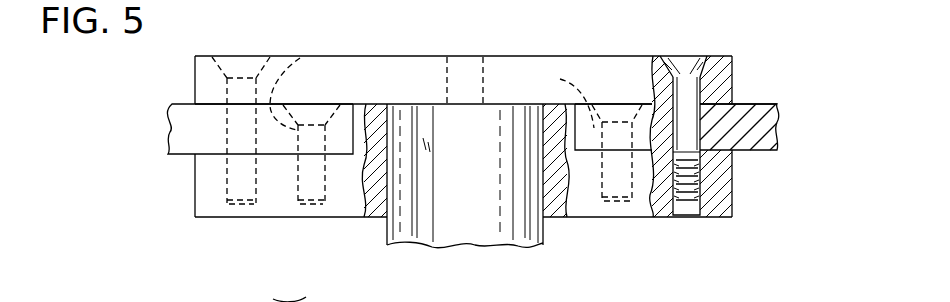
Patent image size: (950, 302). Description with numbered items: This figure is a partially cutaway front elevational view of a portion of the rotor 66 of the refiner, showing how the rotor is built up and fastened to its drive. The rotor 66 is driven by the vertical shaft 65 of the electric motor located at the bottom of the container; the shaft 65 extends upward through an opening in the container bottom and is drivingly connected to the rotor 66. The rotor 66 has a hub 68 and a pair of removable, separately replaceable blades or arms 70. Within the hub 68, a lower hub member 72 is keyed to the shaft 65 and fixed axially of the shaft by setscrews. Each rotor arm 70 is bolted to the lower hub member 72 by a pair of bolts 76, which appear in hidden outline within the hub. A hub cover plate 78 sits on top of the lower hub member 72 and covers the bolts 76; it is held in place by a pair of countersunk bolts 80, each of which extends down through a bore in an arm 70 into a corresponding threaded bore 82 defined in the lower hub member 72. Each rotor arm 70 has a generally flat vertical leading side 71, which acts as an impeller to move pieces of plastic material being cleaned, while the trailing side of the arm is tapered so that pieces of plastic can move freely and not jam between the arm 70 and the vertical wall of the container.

The vertical shaft 65 is at (465, 217).
The rotor 66 is at (748, 89).
The hub 68 is at (577, 218).
The rotor arm 70 is at (182, 104).
The leading side 71 is at (210, 141).
The lower hub member 72 is at (276, 202).
The bolt 76 is at (290, 80).
The hub cover plate 78 is at (507, 56).
The countersunk bolt 80 is at (688, 56).
The threaded bore 82 is at (684, 217).